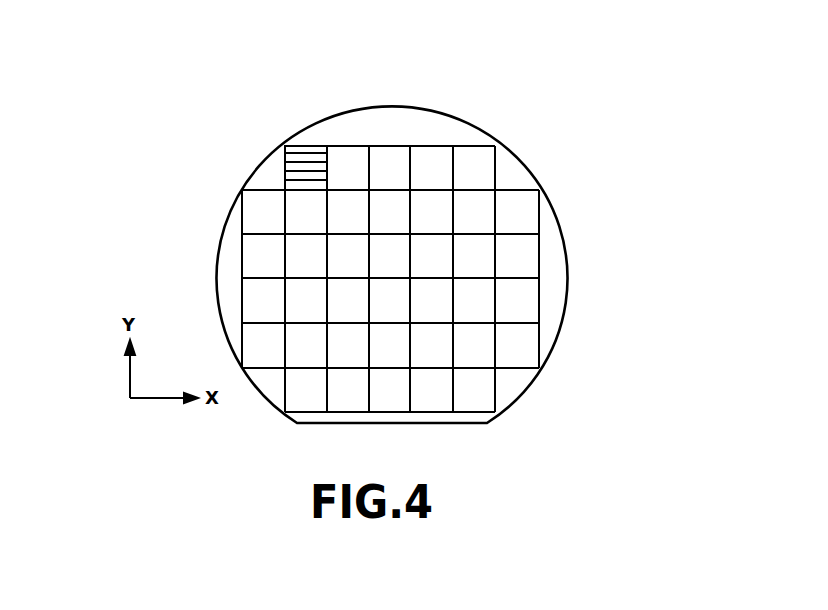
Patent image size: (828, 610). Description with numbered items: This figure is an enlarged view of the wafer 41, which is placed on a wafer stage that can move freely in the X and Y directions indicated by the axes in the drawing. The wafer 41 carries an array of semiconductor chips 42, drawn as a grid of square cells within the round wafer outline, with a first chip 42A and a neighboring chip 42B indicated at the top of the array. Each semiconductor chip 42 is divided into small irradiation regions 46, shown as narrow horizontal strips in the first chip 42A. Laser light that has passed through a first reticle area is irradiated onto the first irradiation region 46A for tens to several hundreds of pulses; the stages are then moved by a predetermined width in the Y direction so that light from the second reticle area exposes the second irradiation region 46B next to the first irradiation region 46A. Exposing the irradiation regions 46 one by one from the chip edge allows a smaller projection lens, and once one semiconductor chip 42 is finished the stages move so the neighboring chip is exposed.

The wafer 41 is at (555, 212).
The semiconductor chip 42 is at (407, 55).
The first chip 42A is at (305, 146).
The shot region 42B is at (355, 146).
The irradiation regions 46 is at (157, 105).
The first irradiation region 46A is at (285, 148).
The second irradiation region 46B is at (287, 151).